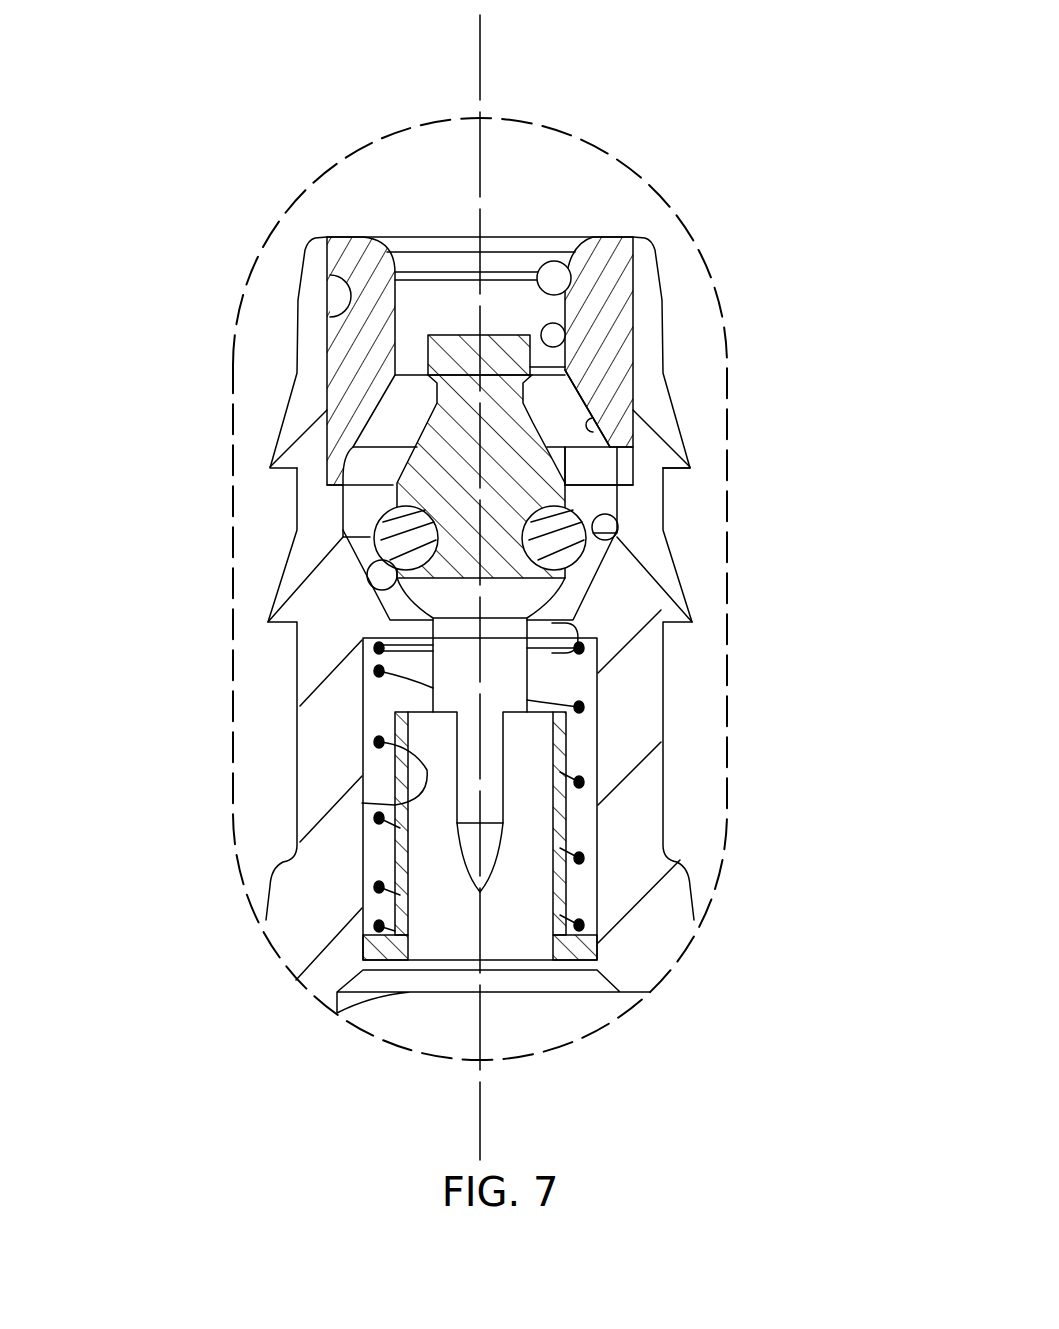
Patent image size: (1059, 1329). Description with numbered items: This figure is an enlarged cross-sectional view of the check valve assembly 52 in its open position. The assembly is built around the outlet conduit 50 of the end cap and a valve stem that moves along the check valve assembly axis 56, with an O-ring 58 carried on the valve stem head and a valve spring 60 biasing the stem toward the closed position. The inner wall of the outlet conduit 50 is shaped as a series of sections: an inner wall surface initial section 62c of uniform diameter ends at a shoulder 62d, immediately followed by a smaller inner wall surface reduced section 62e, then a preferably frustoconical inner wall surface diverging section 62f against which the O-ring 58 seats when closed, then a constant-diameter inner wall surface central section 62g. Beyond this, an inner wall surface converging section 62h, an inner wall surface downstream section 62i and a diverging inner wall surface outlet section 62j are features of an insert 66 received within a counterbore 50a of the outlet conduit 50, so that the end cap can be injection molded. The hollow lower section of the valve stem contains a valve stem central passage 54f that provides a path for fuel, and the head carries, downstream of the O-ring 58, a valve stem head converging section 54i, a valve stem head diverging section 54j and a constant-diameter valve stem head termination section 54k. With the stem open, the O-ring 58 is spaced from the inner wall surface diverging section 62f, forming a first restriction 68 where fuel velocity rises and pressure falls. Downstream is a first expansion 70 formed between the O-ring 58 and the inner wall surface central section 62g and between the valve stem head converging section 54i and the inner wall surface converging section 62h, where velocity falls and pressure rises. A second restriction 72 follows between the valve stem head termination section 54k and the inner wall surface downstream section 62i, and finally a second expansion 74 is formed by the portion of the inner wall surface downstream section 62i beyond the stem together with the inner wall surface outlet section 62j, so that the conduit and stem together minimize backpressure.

The outlet conduit 50 is at (293, 440).
The counterbore 50a is at (345, 297).
The check valve assembly 52 is at (702, 148).
The valve stem central passage 54f is at (535, 915).
The valve stem head converging section 54i is at (548, 460).
The valve stem head diverging section 54j is at (552, 388).
The valve stem head termination section 54k is at (545, 352).
The check valve assembly axis 56 is at (485, 62).
The O-ring 58 is at (395, 543).
The valve spring 60 is at (582, 803).
The inner wall surface initial section 62c is at (377, 741).
The shoulder 62d is at (378, 663).
The inner wall surface reduced section 62e is at (585, 650).
The inner wall surface diverging section 62f is at (372, 562).
The inner wall surface central section 62g is at (618, 546).
The inner wall surface converging section 62h is at (582, 427).
The inner wall surface downstream section 62i is at (563, 345).
The inner wall surface outlet section 62j is at (560, 288).
The insert 66 is at (330, 355).
The first restriction 68 is at (368, 562).
The first expansion 70 is at (378, 440).
The second restriction 72 is at (405, 348).
The second expansion 74 is at (430, 308).